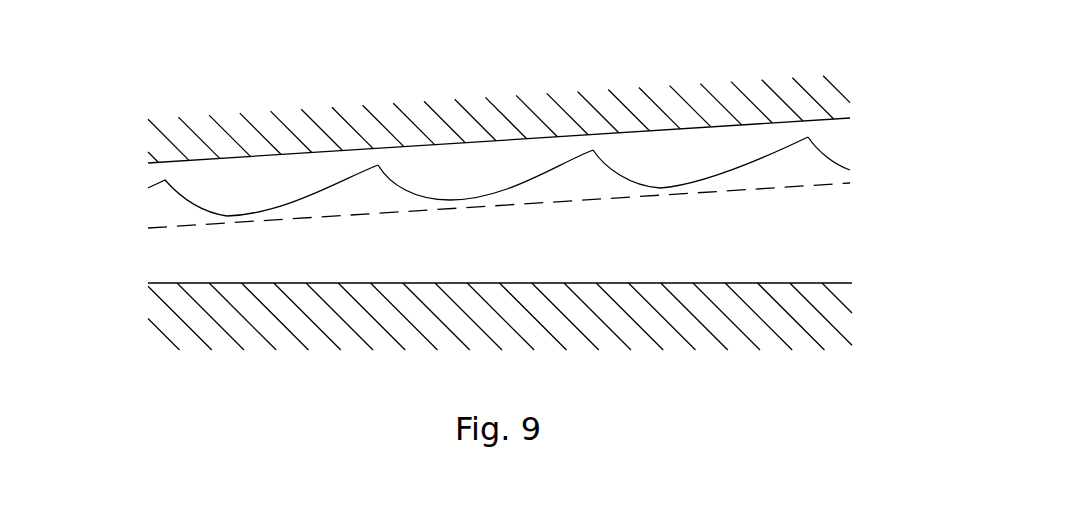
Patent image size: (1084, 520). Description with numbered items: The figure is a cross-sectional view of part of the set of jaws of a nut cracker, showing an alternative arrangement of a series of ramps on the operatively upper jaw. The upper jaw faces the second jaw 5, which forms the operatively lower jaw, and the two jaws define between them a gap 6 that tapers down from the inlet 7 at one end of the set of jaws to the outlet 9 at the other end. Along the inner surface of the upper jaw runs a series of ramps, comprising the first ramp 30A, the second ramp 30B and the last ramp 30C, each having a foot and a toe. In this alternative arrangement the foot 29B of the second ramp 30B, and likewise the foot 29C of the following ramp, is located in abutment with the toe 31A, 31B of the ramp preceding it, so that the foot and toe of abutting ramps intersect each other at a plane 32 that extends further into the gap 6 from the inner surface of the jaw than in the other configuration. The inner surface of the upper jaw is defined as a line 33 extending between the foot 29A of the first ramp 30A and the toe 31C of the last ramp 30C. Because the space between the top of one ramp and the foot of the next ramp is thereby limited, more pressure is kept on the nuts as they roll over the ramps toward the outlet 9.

The second jaw 5 is at (870, 313).
The gap 6 is at (855, 225).
The inlet 7 is at (860, 196).
The outlet 9 is at (134, 251).
The foot of the first ramp 29A is at (797, 147).
The foot of the second ramp 29B is at (568, 165).
The foot of the third ramp 29C is at (353, 180).
The first ramp 30A is at (683, 160).
The second ramp 30B is at (463, 178).
The last ramp 30C is at (253, 180).
The toe of the first ramp 31A is at (613, 175).
The toe of the second ramp 31B is at (403, 192).
The toe of the last ramp 31C is at (190, 207).
The plane 32 is at (590, 152).
The line 33 is at (193, 163).